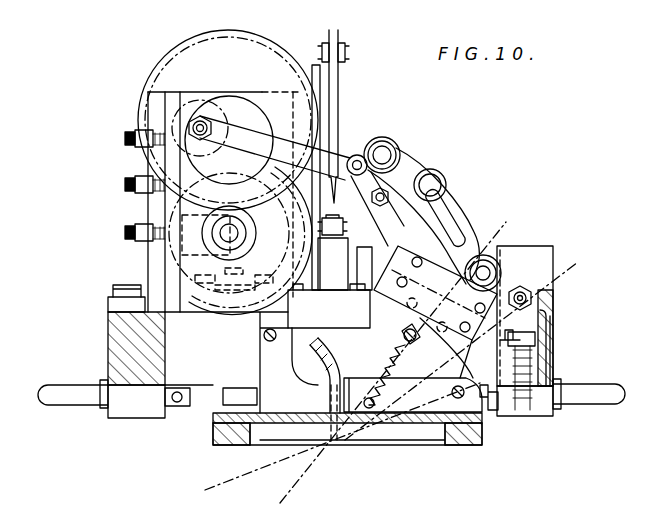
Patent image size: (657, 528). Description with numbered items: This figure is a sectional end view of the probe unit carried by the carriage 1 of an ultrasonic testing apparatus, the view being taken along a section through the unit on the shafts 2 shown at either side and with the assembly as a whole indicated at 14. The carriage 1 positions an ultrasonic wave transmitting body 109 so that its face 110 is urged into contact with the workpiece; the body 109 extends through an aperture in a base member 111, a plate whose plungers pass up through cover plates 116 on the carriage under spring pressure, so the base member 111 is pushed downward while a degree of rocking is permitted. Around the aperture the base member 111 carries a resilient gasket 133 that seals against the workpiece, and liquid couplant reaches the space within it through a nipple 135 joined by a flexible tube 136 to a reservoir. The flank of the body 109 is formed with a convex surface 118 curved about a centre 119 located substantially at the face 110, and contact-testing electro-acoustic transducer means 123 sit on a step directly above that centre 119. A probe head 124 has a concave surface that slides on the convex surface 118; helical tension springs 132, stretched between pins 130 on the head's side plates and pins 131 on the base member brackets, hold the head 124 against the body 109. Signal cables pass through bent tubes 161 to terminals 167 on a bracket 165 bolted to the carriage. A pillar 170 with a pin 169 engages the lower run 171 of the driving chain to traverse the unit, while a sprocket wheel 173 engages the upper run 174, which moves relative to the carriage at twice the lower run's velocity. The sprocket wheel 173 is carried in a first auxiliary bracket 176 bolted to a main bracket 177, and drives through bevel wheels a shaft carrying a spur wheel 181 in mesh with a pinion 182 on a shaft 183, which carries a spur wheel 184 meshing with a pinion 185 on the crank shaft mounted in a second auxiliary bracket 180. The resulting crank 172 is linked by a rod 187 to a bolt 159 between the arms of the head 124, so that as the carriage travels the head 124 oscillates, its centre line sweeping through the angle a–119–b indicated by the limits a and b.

The carriage 1 is at (552, 342).
The shaft 2 is at (68, 392).
The labeling head 14 is at (498, 158).
The ultrasonic wave transmitting body 109 is at (300, 352).
The face 110 is at (378, 443).
The base member 111 is at (418, 424).
The cover plate 116 is at (210, 303).
The convex surface 118 is at (468, 376).
The centre of curvature 119 is at (334, 442).
The contact-testing electro-acoustic transducer means 123 is at (333, 320).
The probe head 124 is at (466, 266).
The pin 130 is at (403, 336).
The pin 131 is at (378, 404).
The helical tension spring 132 is at (392, 370).
The gasket 133 is at (476, 434).
The nipple 135 is at (296, 428).
The flexible tube 136 is at (328, 366).
The bolt 159 is at (398, 152).
The tube 161 is at (450, 220).
The bracket 165 is at (546, 294).
The terminals 167 is at (350, 405).
The pin 169 is at (332, 211).
The pillar 170 is at (330, 262).
The lower run 171 is at (336, 250).
The crank 172 is at (236, 106).
The sprocket wheel 173 is at (340, 80).
The upper run 174 is at (345, 50).
The first auxiliary bracket 176 is at (305, 175).
The main bracket 177 is at (152, 264).
The second auxiliary bracket 180 is at (173, 180).
The spur wheel 181 is at (252, 54).
The pinion 182 is at (178, 210).
The shaft 183 is at (228, 233).
The spur wheel 184 is at (240, 241).
The pinion 185 is at (268, 106).
The rod 187 is at (288, 140).
The angle limit a is at (398, 352).
The angle limit b is at (391, 373).